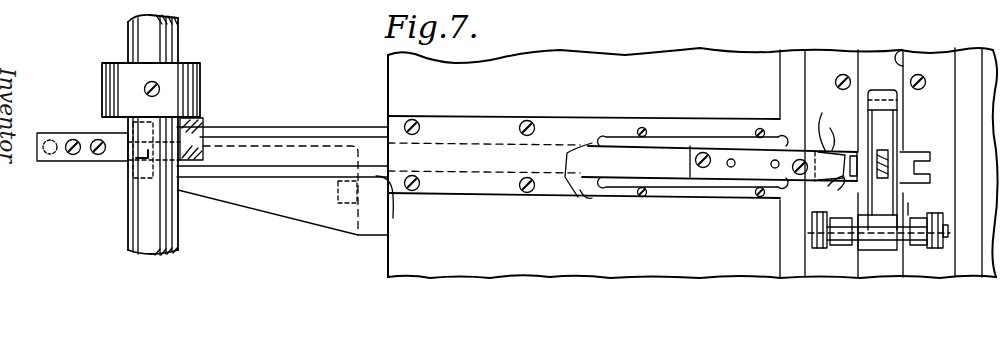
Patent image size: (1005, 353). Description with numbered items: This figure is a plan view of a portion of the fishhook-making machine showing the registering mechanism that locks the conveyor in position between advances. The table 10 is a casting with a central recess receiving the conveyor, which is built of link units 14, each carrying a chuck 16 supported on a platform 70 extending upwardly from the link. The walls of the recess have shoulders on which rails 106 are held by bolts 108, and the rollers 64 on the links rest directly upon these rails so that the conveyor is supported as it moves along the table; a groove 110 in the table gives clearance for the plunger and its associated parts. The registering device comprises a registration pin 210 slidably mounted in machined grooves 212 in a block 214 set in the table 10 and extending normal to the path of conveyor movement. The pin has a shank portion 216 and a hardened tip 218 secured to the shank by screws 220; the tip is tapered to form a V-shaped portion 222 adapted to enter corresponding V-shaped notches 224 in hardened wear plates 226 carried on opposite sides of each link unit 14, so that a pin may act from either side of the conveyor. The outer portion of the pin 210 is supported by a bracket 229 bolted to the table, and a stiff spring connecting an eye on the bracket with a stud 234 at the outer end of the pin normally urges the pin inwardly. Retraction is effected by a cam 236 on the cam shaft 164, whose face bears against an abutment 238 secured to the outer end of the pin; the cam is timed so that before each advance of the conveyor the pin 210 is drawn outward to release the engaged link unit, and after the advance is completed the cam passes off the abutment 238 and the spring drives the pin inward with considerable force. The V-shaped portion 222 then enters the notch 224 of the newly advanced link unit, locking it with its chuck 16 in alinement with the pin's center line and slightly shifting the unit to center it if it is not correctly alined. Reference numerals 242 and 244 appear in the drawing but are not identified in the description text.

The table 10 is at (706, 62).
The link unit 14 is at (927, 203).
The chuck 16 is at (893, 158).
The rollers 64 is at (930, 246).
The platform 70 is at (882, 122).
The rails 106 is at (835, 60).
The bolts 108 is at (838, 80).
The groove 110 is at (905, 45).
The cam shaft 164 is at (170, 44).
The registration pin 210 is at (802, 150).
The machined grooves 212 is at (588, 142).
The block 214 is at (707, 195).
The shank portion 216 is at (630, 165).
The hardened tip 218 is at (752, 167).
The screws 220 is at (798, 160).
The V-shaped portion 222 is at (830, 121).
The V-shaped notches 224 is at (836, 152).
The hardened wear plates 226 is at (826, 192).
The bracket 229 is at (403, 205).
The stud 234 is at (61, 142).
The cam 236 is at (193, 130).
The abutment 238 is at (126, 156).
The plate 242 is at (440, 124).
The screws 244 is at (519, 191).